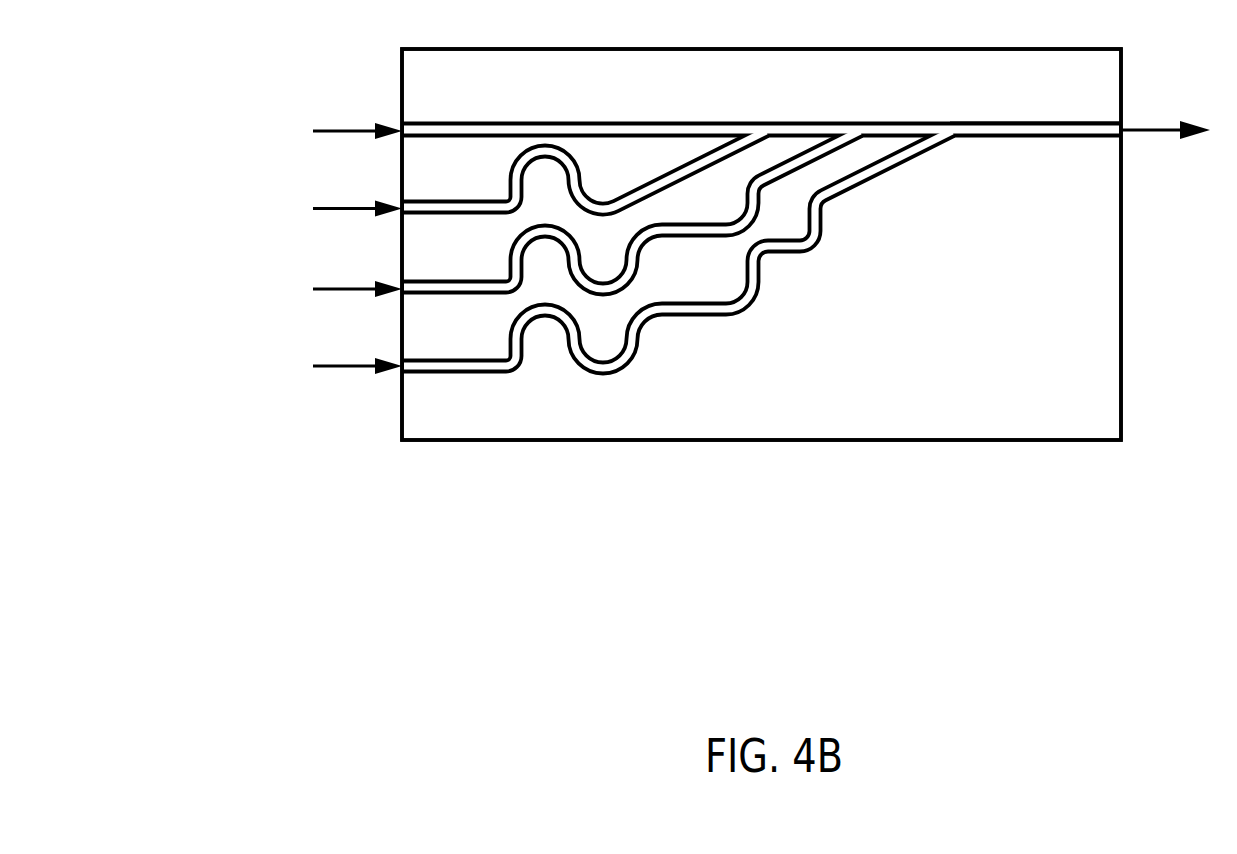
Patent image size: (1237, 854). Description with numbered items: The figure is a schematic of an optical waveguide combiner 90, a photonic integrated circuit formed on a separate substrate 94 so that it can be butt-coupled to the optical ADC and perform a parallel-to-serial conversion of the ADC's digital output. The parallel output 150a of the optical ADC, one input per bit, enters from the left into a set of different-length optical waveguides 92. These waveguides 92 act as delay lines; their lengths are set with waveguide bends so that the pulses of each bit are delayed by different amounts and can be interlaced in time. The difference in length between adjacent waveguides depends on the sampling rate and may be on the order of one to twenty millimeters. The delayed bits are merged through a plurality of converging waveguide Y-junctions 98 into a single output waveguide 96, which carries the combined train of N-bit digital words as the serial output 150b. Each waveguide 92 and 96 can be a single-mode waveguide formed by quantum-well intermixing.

The optical waveguide combiner 90 is at (1001, 472).
The optical waveguides 92 is at (452, 138).
The separate substrate 94 is at (1078, 390).
The single output waveguide 96 is at (1036, 123).
The converging waveguide Y-junctions 98 is at (845, 131).
The parallel output 150a is at (323, 366).
The serial output 150b is at (1150, 135).